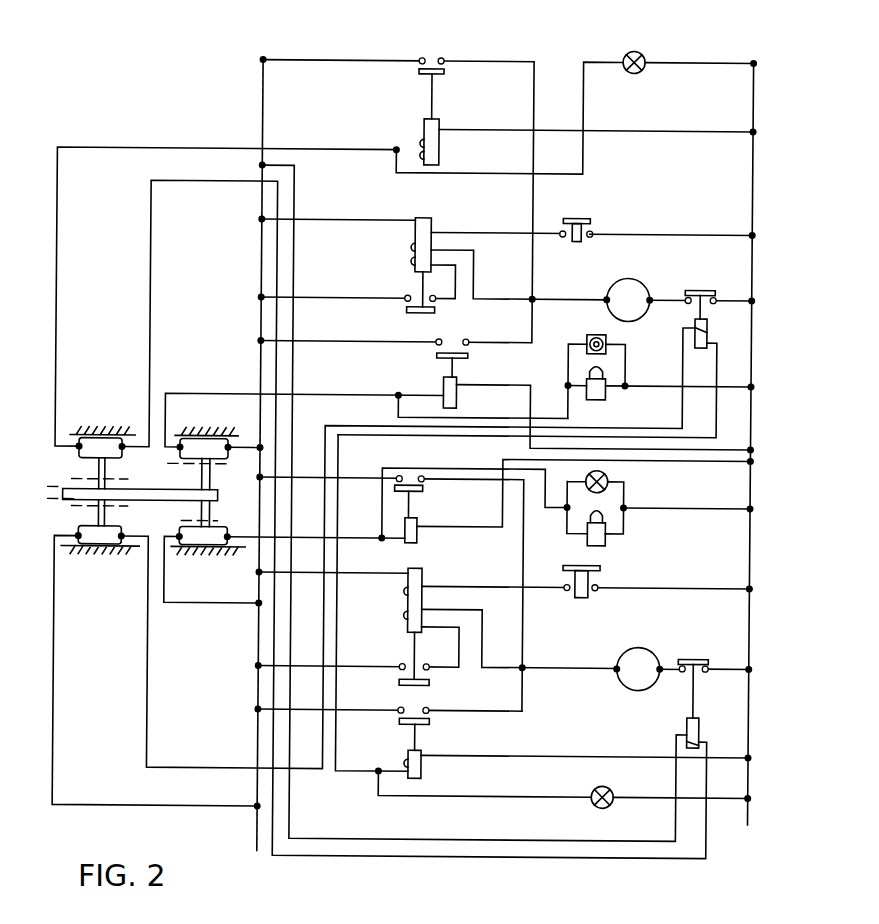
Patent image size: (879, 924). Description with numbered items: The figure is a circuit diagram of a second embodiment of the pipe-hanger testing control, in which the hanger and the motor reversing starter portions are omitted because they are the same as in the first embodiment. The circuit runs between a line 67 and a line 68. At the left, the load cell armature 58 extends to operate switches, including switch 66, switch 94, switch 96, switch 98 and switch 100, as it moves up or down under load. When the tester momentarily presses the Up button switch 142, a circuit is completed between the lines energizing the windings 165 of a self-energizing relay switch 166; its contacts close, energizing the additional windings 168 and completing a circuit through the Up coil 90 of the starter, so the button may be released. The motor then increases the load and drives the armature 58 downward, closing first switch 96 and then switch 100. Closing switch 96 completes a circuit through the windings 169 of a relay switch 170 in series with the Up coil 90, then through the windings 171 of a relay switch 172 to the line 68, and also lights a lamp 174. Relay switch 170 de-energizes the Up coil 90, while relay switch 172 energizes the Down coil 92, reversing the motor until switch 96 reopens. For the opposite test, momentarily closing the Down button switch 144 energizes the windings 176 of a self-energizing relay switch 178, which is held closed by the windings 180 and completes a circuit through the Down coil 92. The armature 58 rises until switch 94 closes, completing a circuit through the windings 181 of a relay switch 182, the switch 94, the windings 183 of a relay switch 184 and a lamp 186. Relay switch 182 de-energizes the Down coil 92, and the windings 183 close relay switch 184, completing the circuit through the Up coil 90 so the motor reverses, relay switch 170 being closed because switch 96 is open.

The load cell armature 58 is at (75, 502).
The switch 66 is at (262, 561).
The line 67 is at (258, 196).
The line 68 is at (750, 169).
The Up coil 90 is at (616, 291).
The Down coil 92 is at (640, 647).
The switch 94 is at (102, 458).
The switch 96 is at (100, 526).
The limit switch 98 is at (206, 458).
The switch 100 is at (208, 527).
The Up button switch 142 is at (592, 219).
The Down button switch 144 is at (600, 568).
The windings 165 is at (430, 228).
The self-energizing relay switch 166 is at (420, 217).
The additional windings 168 is at (413, 252).
The windings 169 is at (707, 331).
The relay switch 170 is at (704, 349).
The windings 171 is at (427, 771).
The relay switch 172 is at (416, 779).
The lamp 174 is at (596, 805).
The windings 176 is at (423, 578).
The self-energizing relay switch 178 is at (410, 594).
The windings 180 is at (410, 618).
The windings 181 is at (686, 738).
The relay switch 182 is at (690, 752).
The windings 183 is at (423, 136).
The relay switch 184 is at (431, 163).
The lamp 186 is at (644, 53).